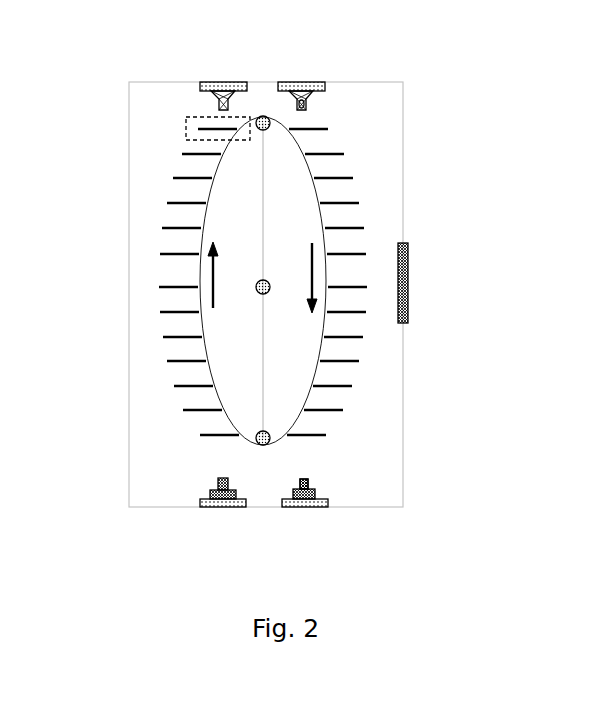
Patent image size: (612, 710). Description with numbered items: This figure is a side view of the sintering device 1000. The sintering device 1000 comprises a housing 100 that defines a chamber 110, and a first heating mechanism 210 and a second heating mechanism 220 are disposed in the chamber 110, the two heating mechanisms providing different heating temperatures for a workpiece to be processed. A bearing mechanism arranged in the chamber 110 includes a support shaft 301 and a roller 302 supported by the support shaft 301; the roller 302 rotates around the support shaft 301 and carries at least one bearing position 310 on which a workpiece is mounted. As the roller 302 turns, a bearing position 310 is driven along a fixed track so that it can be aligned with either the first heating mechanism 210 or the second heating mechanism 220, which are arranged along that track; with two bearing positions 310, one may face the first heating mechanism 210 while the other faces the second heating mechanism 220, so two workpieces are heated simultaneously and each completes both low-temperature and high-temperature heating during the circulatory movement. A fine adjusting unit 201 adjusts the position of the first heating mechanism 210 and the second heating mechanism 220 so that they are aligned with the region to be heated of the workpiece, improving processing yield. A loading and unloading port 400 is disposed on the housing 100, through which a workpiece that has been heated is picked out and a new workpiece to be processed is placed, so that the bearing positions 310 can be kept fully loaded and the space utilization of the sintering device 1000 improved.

The sintering device 1000 is at (302, 568).
The housing 100 is at (403, 195).
The chamber 110 is at (374, 127).
The fine adjusting unit 201 is at (294, 88).
The first heating mechanism 210 is at (306, 105).
The second heating mechanism 220 is at (305, 482).
The support shaft 301 is at (259, 128).
The roller 302 is at (323, 344).
The bearing position 310 is at (186, 128).
The loading and unloading port 400 is at (406, 276).